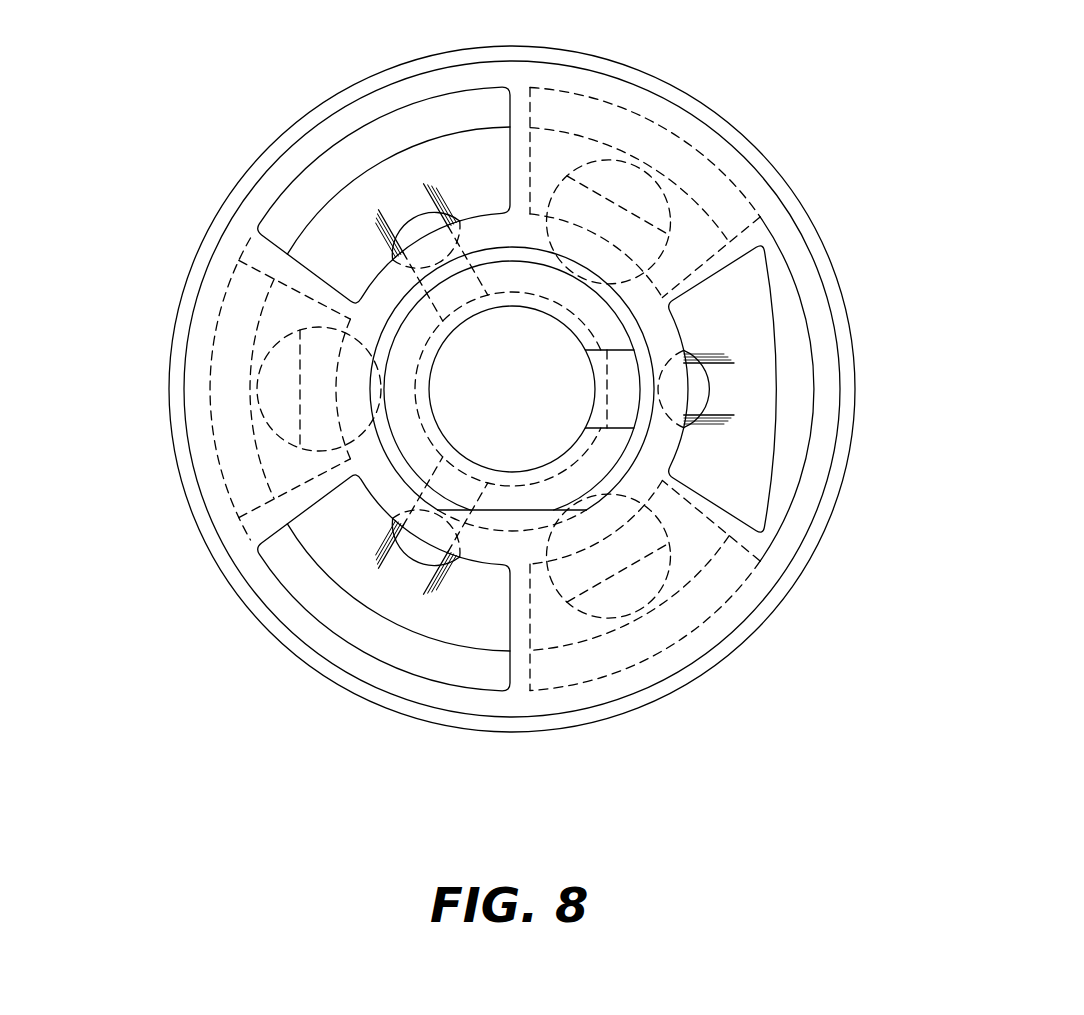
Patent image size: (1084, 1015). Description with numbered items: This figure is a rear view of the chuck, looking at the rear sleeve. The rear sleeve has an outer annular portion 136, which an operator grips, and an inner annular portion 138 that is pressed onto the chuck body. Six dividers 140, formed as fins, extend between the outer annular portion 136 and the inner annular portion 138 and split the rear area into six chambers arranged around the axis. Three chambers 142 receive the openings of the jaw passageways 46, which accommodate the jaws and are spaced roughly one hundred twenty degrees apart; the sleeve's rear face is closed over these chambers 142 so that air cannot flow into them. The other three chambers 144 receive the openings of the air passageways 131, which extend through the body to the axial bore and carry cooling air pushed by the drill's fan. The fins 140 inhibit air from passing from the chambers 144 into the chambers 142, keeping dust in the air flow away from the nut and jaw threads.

The passageway 46 is at (196, 430).
The air passageway 131 is at (415, 208).
The outer annular portion 136 is at (814, 232).
The inner annular portion 138 is at (688, 452).
The divider 140 is at (532, 88).
The chamber 142 is at (700, 562).
The chamber 144 is at (493, 188).